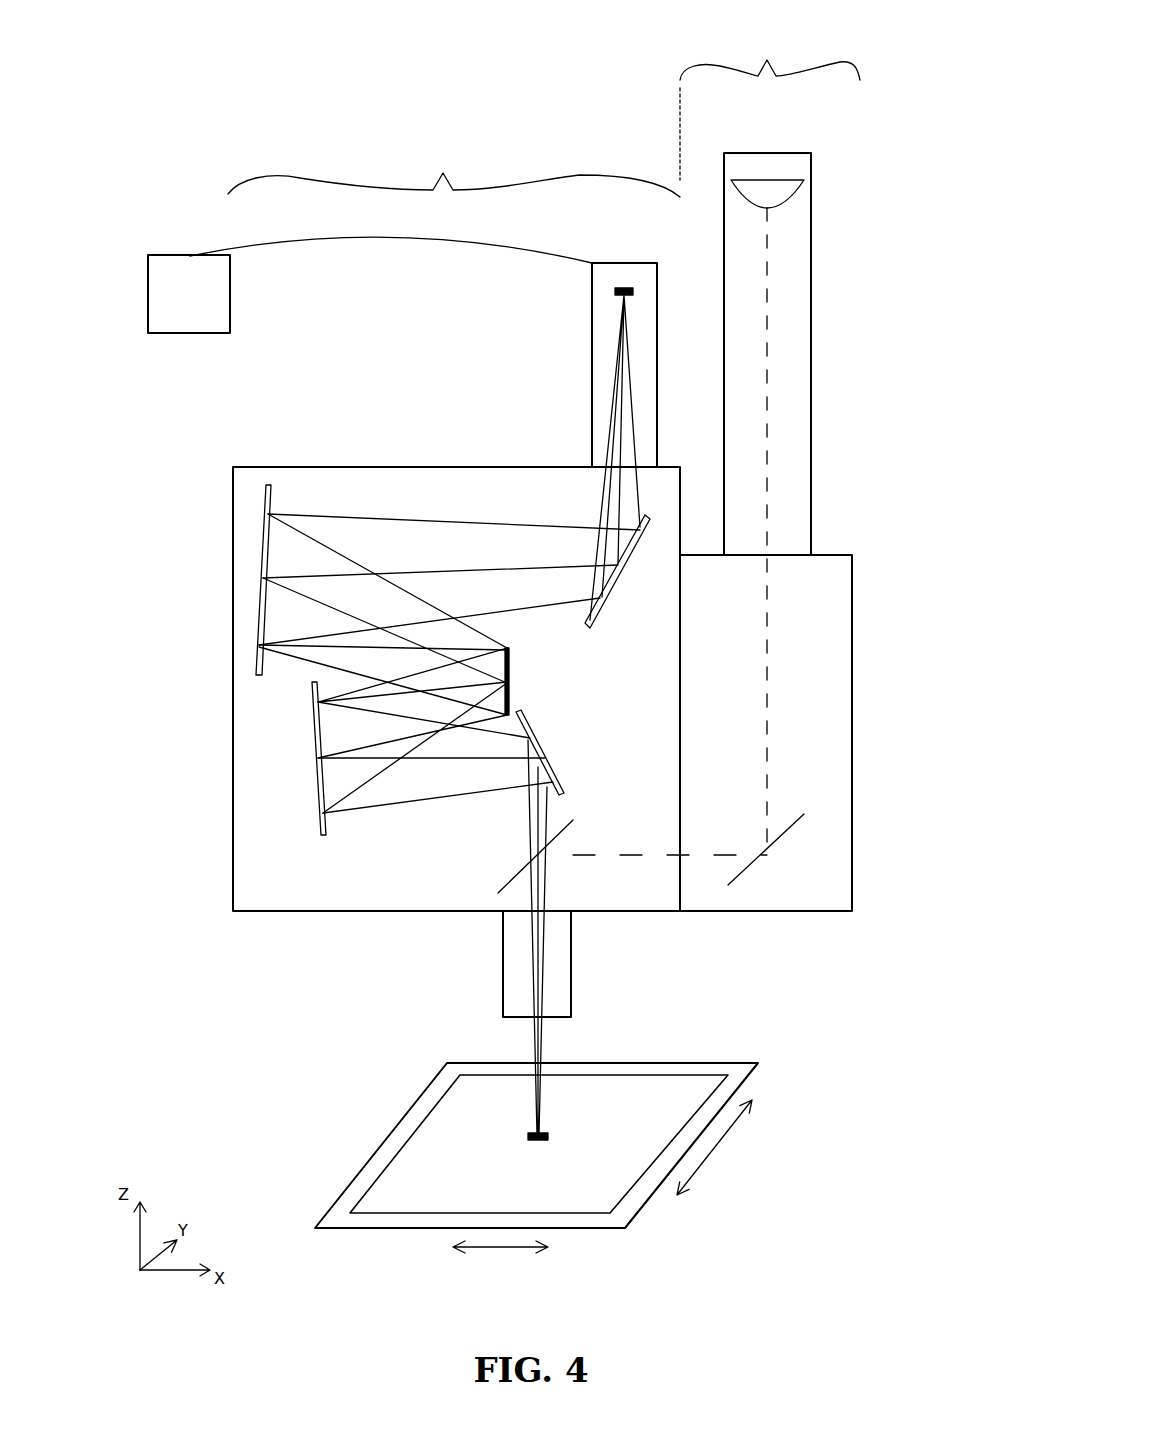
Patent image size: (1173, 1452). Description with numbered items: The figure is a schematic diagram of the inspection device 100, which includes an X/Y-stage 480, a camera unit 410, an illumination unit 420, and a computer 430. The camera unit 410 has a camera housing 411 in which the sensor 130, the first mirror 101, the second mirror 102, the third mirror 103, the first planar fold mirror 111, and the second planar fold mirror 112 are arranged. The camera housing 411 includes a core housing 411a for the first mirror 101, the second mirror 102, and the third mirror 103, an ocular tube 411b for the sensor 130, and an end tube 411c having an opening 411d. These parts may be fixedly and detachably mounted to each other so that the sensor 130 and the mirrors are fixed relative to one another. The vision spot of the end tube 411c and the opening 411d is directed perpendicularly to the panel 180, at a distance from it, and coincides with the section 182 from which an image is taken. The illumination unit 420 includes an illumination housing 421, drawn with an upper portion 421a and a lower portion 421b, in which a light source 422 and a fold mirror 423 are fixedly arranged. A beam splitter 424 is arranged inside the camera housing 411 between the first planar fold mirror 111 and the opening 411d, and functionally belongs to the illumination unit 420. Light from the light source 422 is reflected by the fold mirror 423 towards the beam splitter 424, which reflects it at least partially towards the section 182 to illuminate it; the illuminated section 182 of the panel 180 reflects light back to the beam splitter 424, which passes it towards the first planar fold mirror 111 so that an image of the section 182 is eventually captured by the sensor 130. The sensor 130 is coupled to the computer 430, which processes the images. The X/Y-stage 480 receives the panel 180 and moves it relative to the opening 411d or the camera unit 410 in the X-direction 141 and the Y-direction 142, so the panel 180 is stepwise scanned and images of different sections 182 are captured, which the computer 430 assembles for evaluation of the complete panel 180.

The inspection device 100 is at (366, 43).
The camera unit 410 is at (454, 172).
The illumination unit 420 is at (770, 105).
The computer 430 is at (190, 256).
The light source 422 is at (781, 181).
The illumination housing portion 421a is at (812, 365).
The illumination housing 421 is at (842, 434).
The illumination housing portion 421b is at (828, 555).
The fold mirror 423 is at (752, 866).
The beam splitter 424 is at (522, 878).
The camera housing 411 is at (257, 391).
The core housing 411a is at (332, 467).
The ocular tube 411b is at (592, 350).
The end tube 411c is at (503, 967).
The opening 411d is at (540, 1015).
The sensor 130 is at (630, 289).
The second planar fold mirror 112 is at (617, 582).
The third mirror 103 is at (260, 538).
The second mirror 102 is at (510, 690).
The first mirror 101 is at (312, 772).
The first planar fold mirror 111 is at (547, 760).
The X/Y-stage 480 is at (345, 1190).
The panel 180 is at (467, 1122).
The section 182 is at (548, 1132).
The Y-direction 142 is at (700, 1178).
The X-direction 141 is at (492, 1250).